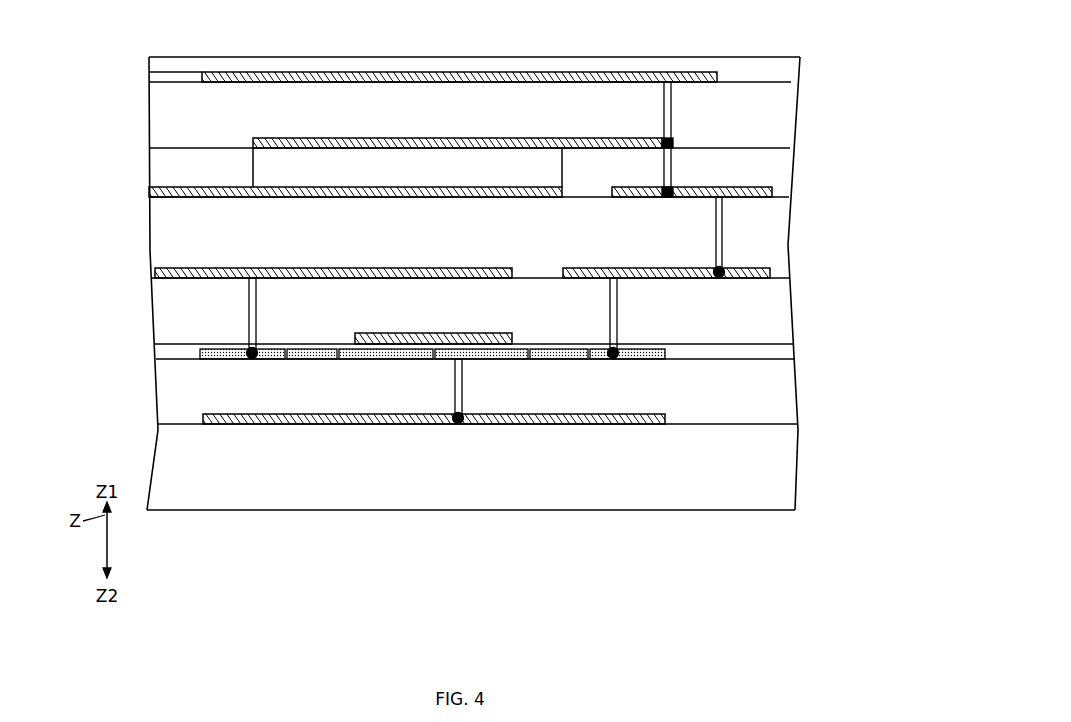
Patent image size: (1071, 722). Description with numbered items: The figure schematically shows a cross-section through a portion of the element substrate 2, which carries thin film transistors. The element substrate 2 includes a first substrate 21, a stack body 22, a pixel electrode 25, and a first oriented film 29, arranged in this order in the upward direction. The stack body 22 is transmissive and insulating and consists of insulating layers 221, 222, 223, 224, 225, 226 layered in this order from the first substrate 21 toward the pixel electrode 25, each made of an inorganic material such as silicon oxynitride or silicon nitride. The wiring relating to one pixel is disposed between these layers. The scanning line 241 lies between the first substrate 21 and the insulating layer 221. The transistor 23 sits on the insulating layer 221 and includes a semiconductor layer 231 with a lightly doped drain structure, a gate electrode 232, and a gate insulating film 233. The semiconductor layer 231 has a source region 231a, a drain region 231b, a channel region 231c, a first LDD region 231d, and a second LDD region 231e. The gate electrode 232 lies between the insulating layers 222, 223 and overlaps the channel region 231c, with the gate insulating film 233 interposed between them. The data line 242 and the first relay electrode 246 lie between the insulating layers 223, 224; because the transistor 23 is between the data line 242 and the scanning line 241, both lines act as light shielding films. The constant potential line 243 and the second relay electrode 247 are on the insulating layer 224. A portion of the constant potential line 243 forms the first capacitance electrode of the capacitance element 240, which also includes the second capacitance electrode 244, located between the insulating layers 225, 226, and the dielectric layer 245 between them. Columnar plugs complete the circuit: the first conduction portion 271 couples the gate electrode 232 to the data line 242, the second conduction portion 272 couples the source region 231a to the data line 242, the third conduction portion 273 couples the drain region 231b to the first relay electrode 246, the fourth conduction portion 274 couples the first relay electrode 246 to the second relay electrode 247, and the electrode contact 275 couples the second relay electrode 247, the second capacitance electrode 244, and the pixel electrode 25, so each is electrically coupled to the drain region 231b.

The element substrate 2 is at (801, 53).
The first substrate 21 is at (790, 445).
The stack body 22 is at (841, 100).
The insulating layer 221 is at (786, 382).
The insulating layer 222 is at (786, 352).
The insulating layer 223 is at (786, 312).
The insulating layer 224 is at (786, 218).
The insulating layer 225 is at (786, 170).
The insulating layer 226 is at (786, 113).
The transistor 23 is at (443, 580).
The semiconductor layer 231 is at (432, 466).
The source region 231a is at (275, 359).
The drain region 231b is at (586, 450).
The channel region 231c is at (452, 360).
The first LDD region 231d is at (300, 360).
The second LDD region 231e is at (562, 359).
The gate electrode 232 is at (248, 355).
The gate insulating film 233 is at (357, 335).
The capacitance element 240 is at (92, 130).
The scanning line 241 is at (203, 418).
The data line 242 is at (158, 269).
The constant potential line 243 is at (149, 191).
The second capacitance electrode 244 is at (253, 139).
The dielectric layer 245 is at (258, 165).
The first relay electrode 246 is at (587, 268).
The second relay electrode 247 is at (692, 187).
The pixel electrode 25 is at (149, 75).
The first conduction portion 271 is at (453, 347).
The second conduction portion 272 is at (249, 292).
The third conduction portion 273 is at (620, 320).
The fourth conduction portion 274 is at (721, 245).
The electrode contact 275 is at (666, 105).
The first oriented film 29 is at (786, 72).